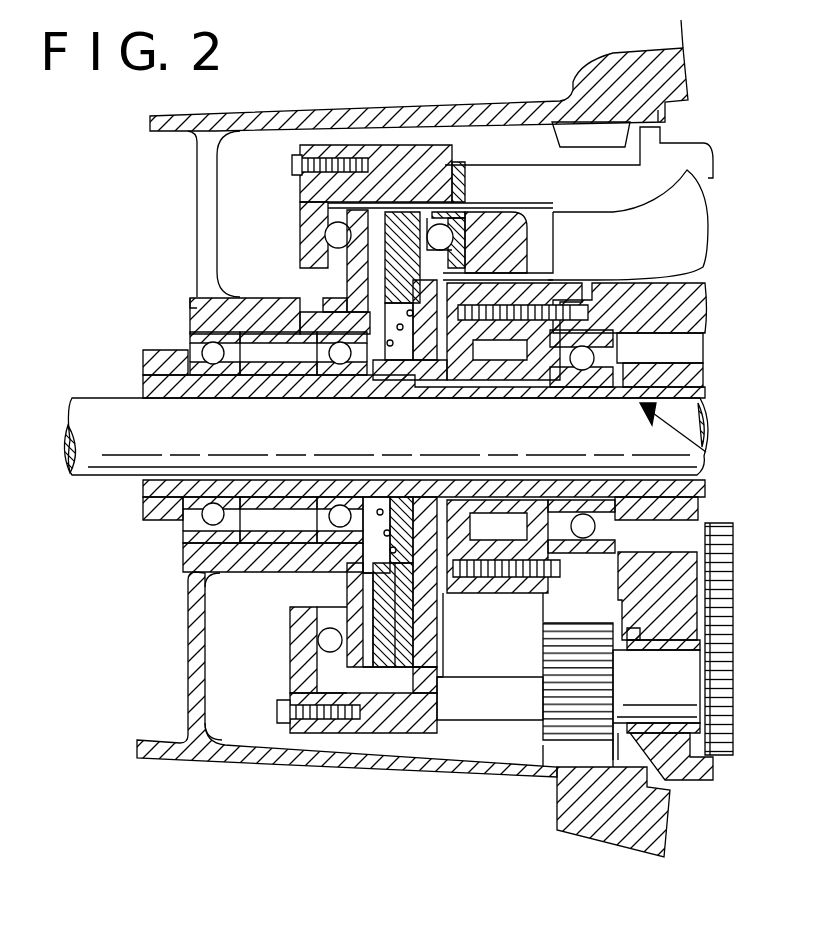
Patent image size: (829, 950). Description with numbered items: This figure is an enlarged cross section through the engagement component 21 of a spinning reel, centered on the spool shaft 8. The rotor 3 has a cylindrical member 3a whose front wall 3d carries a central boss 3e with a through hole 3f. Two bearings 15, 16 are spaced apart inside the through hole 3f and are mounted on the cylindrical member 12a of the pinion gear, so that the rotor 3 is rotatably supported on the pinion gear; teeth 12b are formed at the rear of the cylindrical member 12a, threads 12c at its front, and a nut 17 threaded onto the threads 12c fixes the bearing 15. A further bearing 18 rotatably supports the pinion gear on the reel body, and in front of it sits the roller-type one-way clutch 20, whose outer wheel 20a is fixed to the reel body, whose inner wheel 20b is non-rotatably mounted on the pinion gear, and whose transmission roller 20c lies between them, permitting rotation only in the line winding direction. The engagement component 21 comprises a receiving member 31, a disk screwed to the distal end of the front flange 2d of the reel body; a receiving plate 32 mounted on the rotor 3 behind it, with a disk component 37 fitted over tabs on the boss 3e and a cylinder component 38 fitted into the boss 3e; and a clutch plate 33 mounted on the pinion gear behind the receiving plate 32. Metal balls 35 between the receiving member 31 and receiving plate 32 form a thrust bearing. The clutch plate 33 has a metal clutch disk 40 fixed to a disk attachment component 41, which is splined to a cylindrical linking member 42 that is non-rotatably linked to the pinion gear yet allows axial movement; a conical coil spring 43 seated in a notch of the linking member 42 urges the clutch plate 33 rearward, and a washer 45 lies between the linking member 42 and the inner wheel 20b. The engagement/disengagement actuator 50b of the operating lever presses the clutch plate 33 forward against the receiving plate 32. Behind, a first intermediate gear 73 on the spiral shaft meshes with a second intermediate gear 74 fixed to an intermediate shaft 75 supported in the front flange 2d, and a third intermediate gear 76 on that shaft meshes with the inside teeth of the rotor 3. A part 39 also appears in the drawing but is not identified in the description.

The front flange 2d is at (687, 560).
The rotor 3 is at (462, 778).
The cylindrical member 3a is at (372, 108).
The front wall 3d is at (200, 203).
The boss 3e is at (243, 313).
The through hole 3f is at (190, 310).
The spool shaft 8 is at (683, 422).
The cylindrical member 12a is at (205, 382).
The teeth 12b is at (665, 372).
The threads 12c is at (215, 389).
The bearing 15 is at (215, 340).
The bearing 16 is at (312, 325).
The nut 17 is at (150, 510).
The bearing 18 is at (692, 512).
The roller-type one-way clutch 20 is at (473, 606).
The outer wheel 20a is at (527, 582).
The inner wheel 20b is at (468, 527).
The transmission roller 20c is at (478, 590).
The engagement component 21 is at (355, 668).
The receiving member 31 is at (300, 670).
The receiving plate 32 is at (346, 597).
The clutch plate 33 is at (388, 675).
The metal balls 35 is at (322, 638).
The disk component 37 is at (343, 658).
The cylinder component 38 is at (187, 563).
The hub 39 is at (587, 758).
The clutch disk 40 is at (366, 670).
The disk attachment component 41 is at (397, 670).
The linking member 42 is at (415, 393).
The conical coil spring 43 is at (394, 547).
The washer 45 is at (448, 378).
The engagement/disengagement actuator 50b is at (466, 222).
The first intermediate gear 73 is at (720, 577).
The second intermediate gear 74 is at (727, 665).
The intermediate shaft 75 is at (678, 697).
The third intermediate gear 76 is at (558, 707).